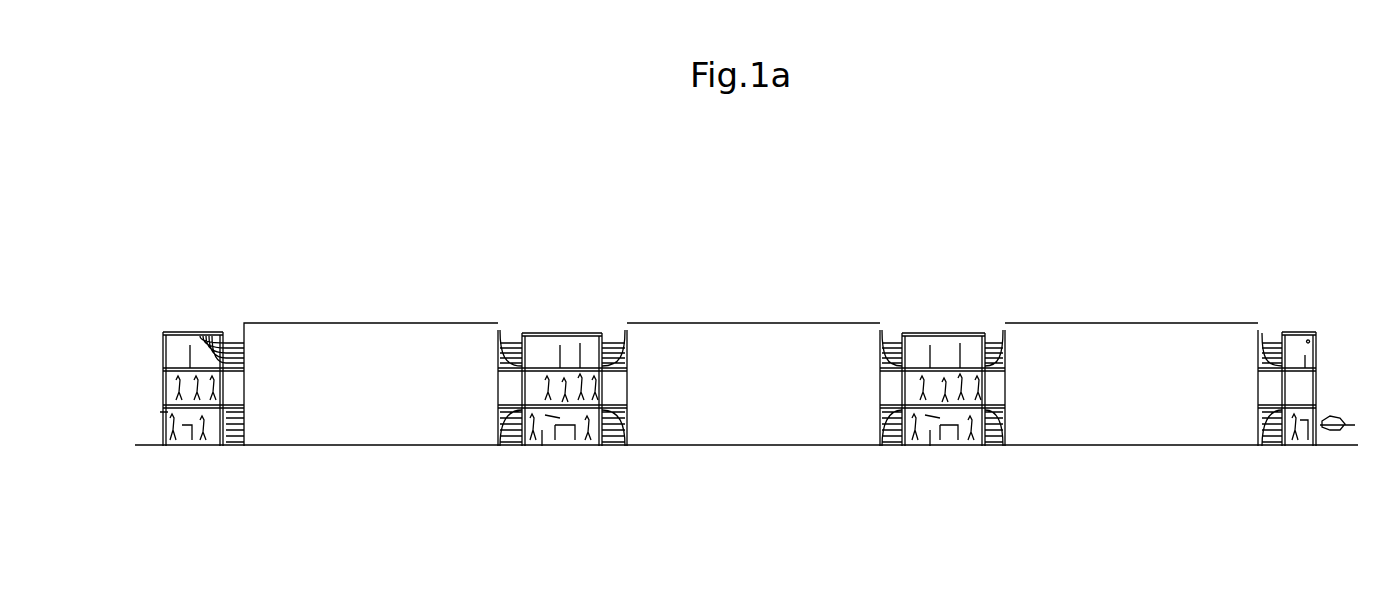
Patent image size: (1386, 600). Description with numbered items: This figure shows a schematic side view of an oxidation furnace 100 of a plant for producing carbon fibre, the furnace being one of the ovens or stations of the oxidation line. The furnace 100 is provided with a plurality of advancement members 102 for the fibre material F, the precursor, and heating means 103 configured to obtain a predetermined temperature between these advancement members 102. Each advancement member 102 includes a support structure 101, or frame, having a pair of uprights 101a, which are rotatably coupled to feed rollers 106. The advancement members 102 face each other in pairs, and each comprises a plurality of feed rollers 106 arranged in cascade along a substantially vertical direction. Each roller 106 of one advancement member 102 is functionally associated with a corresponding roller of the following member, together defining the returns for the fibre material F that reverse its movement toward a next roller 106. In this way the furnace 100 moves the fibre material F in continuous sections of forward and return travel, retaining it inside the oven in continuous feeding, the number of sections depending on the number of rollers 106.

The oxidation furnace 100 is at (1157, 176).
The support structure 101 is at (228, 326).
The upright 101a is at (226, 447).
The advancement member 102 is at (238, 395).
The heating means 103 is at (385, 392).
The feed roller 106 is at (195, 300).
The fibre material F is at (1272, 401).